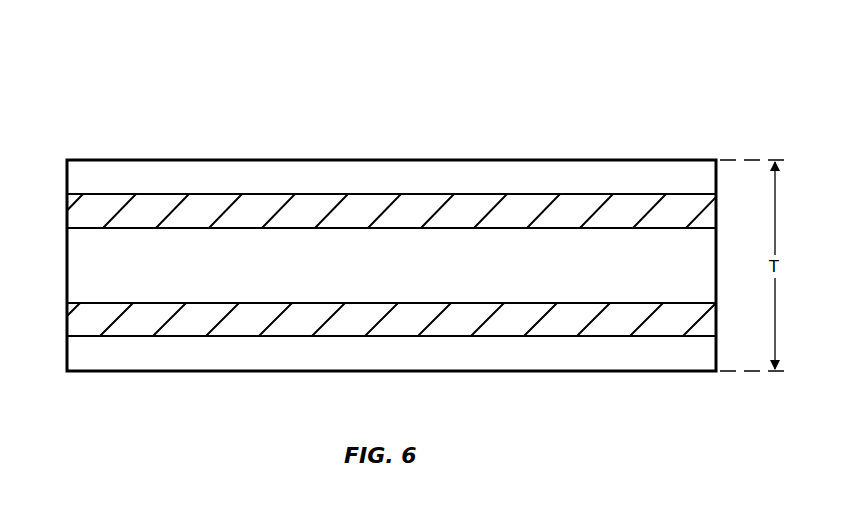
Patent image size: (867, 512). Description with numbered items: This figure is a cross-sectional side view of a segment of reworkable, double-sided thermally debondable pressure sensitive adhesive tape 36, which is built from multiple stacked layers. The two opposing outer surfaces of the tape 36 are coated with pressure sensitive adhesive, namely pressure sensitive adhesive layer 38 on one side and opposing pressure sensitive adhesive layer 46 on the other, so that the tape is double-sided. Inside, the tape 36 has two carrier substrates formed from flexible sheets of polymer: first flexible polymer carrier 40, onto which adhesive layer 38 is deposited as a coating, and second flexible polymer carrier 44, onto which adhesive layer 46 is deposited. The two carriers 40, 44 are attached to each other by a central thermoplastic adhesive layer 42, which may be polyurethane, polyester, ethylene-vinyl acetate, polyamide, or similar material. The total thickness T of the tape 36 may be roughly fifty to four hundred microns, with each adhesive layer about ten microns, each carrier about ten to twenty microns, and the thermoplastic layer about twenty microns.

The pressure sensitive adhesive tape 36 is at (697, 73).
The pressure sensitive adhesive layer 38 is at (72, 176).
The first flexible polymer carrier 40 is at (72, 211).
The thermoplastic adhesive layer 42 is at (72, 265).
The second flexible polymer carrier 44 is at (72, 319).
The pressure sensitive adhesive layer 46 is at (72, 354).